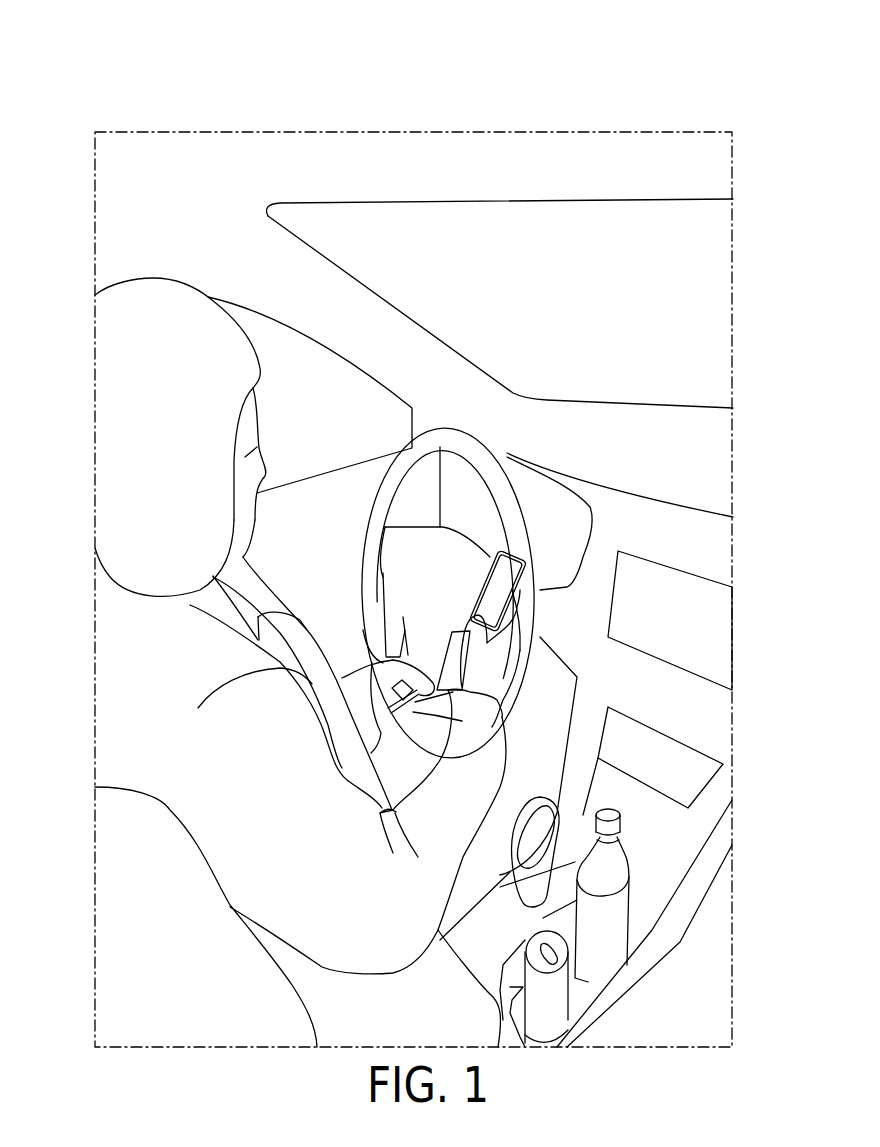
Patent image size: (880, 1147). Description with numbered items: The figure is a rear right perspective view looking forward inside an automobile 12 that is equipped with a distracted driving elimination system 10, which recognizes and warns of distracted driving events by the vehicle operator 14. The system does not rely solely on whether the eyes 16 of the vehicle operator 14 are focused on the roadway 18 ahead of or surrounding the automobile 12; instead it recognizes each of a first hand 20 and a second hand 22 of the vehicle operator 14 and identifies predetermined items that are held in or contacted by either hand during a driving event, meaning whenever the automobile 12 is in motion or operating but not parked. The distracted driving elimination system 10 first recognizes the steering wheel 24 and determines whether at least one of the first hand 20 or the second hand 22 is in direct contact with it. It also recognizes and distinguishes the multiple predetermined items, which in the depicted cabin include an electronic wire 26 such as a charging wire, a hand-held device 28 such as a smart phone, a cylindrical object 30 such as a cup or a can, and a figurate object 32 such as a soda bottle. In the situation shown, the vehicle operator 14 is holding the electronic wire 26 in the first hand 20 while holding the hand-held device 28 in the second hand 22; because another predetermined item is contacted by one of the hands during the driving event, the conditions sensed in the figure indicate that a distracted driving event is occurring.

The distracted driving elimination system 10 is at (506, 62).
The automobile 12 is at (147, 217).
The vehicle operator 14 is at (137, 667).
The eyes 16 is at (262, 448).
The roadway 18 is at (717, 310).
The first hand 20 is at (410, 713).
The second hand 22 is at (505, 666).
The steering wheel 24 is at (490, 452).
The electronic wire 26 is at (407, 623).
The hand-held device 28 is at (510, 540).
The cylindrical object 30 is at (550, 1013).
The figurate object 32 is at (603, 935).